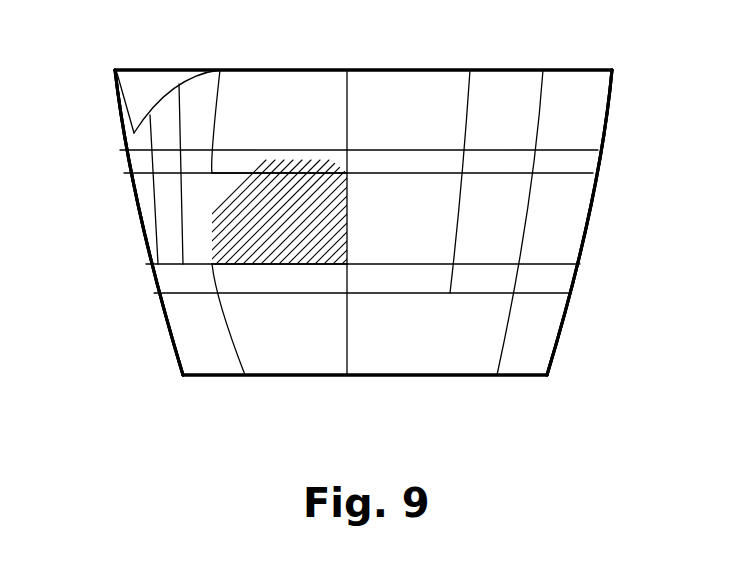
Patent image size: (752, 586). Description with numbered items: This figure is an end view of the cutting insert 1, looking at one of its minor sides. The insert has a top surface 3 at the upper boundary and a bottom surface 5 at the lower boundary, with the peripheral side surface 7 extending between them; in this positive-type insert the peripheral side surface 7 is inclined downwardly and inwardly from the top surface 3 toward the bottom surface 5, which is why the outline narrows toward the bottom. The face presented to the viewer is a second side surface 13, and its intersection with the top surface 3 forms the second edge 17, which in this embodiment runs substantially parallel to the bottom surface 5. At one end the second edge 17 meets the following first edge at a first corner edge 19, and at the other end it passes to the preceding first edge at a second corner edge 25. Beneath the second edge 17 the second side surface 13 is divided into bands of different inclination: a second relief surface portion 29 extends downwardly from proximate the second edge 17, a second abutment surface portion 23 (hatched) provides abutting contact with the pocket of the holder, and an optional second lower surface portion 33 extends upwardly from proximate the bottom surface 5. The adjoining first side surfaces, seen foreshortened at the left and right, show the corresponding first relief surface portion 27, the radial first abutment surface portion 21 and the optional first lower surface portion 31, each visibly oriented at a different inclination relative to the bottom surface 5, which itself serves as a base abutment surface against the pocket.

The cutting insert 1 is at (128, 398).
The top surface 3 is at (470, 70).
The bottom surface 5 is at (390, 375).
The peripheral side surface 7 is at (135, 186).
The second side surface 13 is at (340, 282).
The second edge 17 is at (518, 69).
The first corner edge 19 is at (612, 70).
The first abutment surface portion 21 is at (138, 215).
The second abutment surface portion 23 is at (272, 230).
The second corner edge 25 is at (220, 68).
The first relief surface portion 27 is at (607, 105).
The second relief surface portion 29 is at (412, 105).
The first lower surface portion 31 is at (168, 322).
The second lower surface portion 33 is at (427, 333).